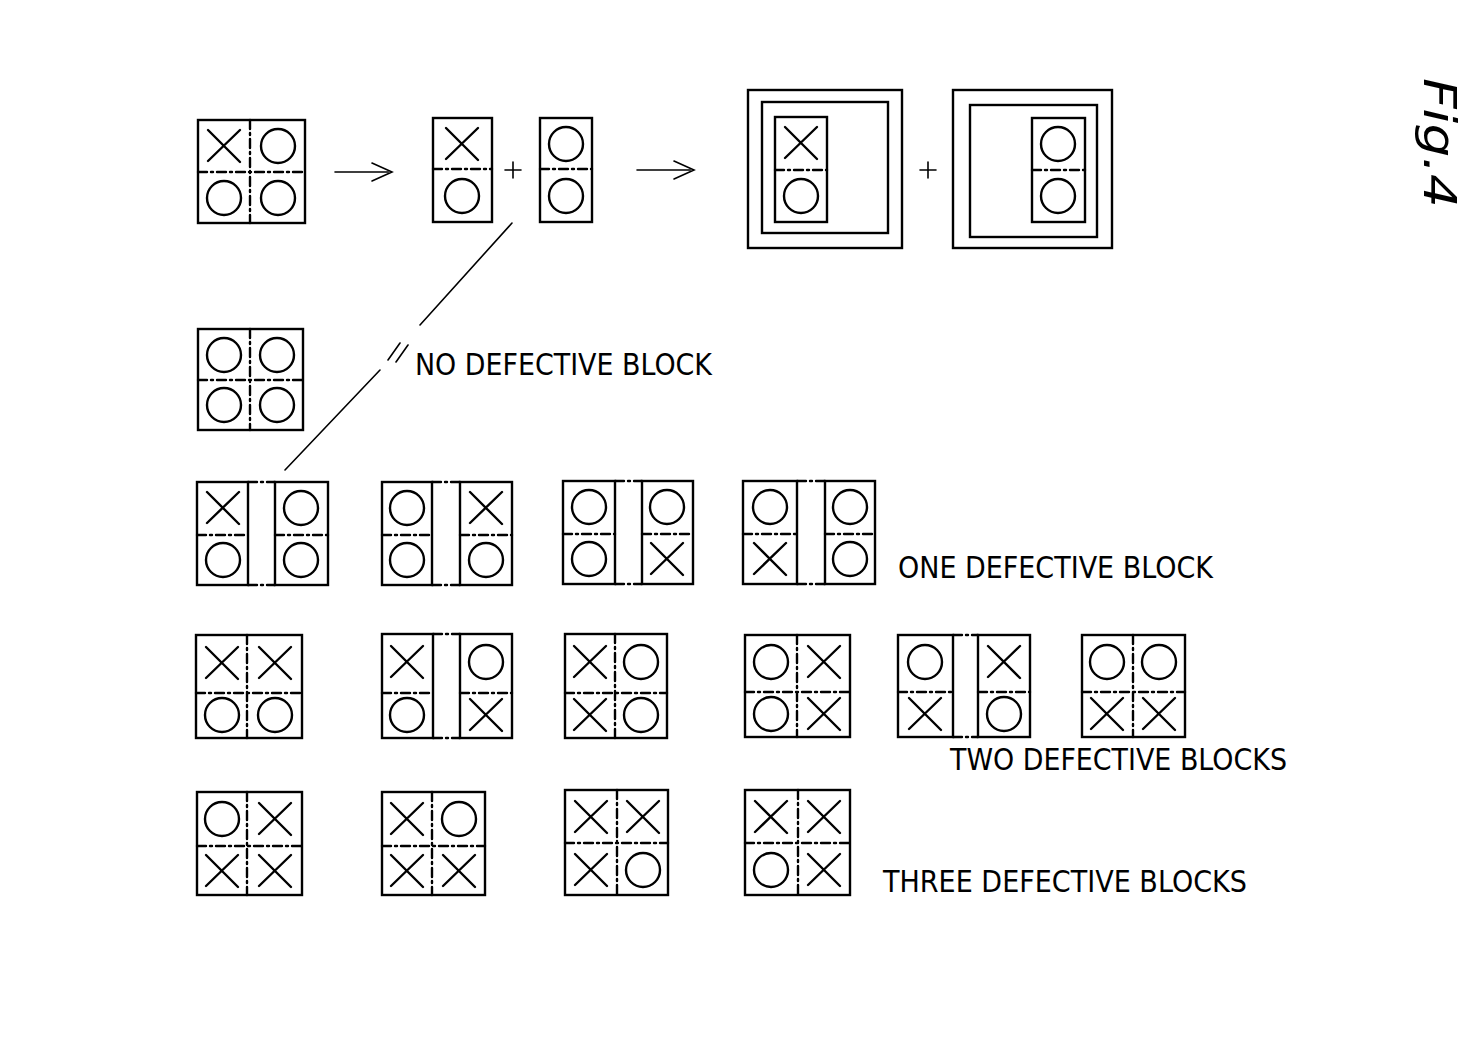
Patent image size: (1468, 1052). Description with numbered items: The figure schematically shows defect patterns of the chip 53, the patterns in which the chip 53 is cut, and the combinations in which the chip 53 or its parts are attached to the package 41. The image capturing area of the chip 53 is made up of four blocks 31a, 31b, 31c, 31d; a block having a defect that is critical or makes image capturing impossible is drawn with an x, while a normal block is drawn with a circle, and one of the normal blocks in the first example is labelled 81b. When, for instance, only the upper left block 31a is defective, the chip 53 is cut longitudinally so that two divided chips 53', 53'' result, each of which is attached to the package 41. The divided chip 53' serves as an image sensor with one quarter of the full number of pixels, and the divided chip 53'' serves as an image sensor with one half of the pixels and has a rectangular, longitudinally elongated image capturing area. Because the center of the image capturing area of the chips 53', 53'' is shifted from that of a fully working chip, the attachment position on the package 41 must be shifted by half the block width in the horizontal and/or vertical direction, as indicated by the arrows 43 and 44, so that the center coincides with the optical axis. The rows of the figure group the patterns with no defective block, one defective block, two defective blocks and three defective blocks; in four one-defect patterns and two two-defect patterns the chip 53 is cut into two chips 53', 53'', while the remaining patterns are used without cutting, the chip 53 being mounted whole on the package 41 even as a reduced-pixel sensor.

The chip 53 is at (280, 470).
The divided chip 53' is at (630, 137).
The divided chip 53'' is at (815, 199).
The upper left block 31a is at (198, 163).
The block 31b is at (592, 130).
The block 31c is at (198, 204).
The block 31d is at (305, 206).
The memory block (non-defective) 81b is at (300, 130).
The package 41 is at (768, 249).
The arrow 43 is at (823, 171).
The arrow 44 is at (1040, 172).